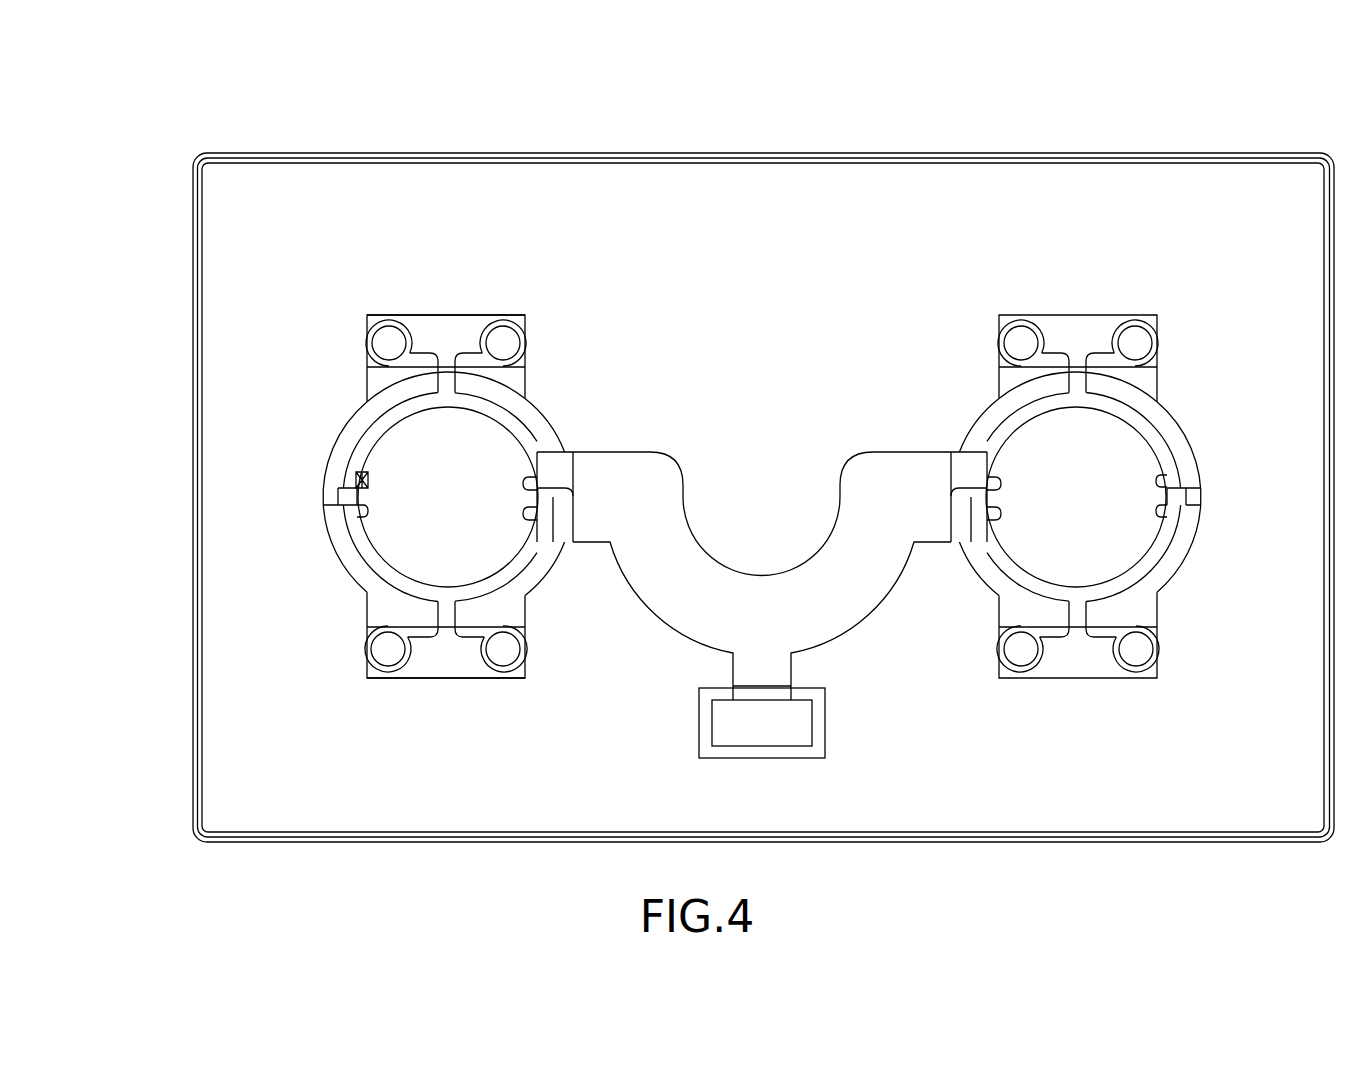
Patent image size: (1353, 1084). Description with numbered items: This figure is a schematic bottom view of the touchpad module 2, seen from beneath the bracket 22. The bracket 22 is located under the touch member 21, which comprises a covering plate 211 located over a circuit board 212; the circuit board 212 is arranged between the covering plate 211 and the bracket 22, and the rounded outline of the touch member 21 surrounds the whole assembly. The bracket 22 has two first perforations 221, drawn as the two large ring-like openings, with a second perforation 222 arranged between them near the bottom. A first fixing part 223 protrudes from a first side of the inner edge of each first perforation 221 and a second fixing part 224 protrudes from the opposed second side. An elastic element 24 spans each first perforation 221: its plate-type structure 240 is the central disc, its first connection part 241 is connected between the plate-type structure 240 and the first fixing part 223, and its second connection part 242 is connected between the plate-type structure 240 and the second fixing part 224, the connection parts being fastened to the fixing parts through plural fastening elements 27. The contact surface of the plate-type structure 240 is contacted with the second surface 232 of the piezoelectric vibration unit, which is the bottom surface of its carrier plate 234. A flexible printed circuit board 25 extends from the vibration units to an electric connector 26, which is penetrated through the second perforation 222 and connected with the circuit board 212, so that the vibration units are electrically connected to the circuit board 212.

The touchpad module 2 is at (1250, 91).
The touch member 21 is at (475, 101).
The covering plate 211 is at (528, 158).
The circuit board 212 is at (432, 158).
The bracket 22 is at (786, 183).
The first perforation 221 is at (353, 561).
The second perforation 222 is at (823, 714).
The first fixing part 223 is at (427, 685).
The second fixing part 224 is at (478, 315).
The elastic element 24 is at (113, 225).
The plate-type structure 240 is at (500, 465).
The first connection part 241 is at (465, 660).
The second connection part 242 is at (445, 333).
The flexible printed circuit board 25 is at (665, 483).
The electric connector 26 is at (755, 745).
The fastening elements 27 is at (510, 343).
The second surface 232 is at (362, 465).
The carrier plate 234 is at (362, 480).